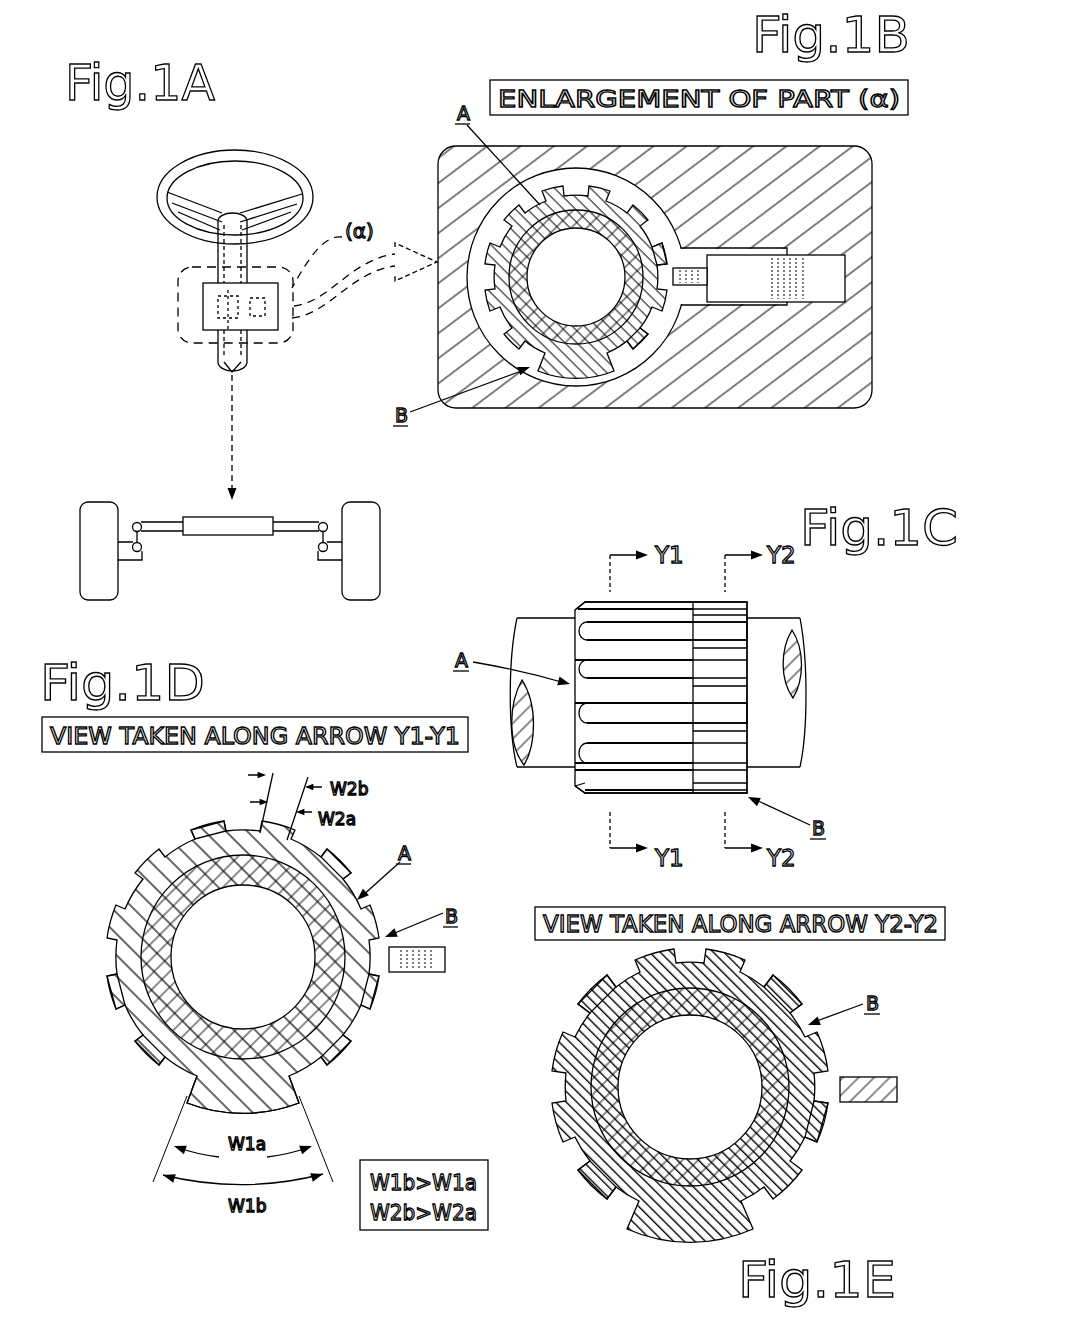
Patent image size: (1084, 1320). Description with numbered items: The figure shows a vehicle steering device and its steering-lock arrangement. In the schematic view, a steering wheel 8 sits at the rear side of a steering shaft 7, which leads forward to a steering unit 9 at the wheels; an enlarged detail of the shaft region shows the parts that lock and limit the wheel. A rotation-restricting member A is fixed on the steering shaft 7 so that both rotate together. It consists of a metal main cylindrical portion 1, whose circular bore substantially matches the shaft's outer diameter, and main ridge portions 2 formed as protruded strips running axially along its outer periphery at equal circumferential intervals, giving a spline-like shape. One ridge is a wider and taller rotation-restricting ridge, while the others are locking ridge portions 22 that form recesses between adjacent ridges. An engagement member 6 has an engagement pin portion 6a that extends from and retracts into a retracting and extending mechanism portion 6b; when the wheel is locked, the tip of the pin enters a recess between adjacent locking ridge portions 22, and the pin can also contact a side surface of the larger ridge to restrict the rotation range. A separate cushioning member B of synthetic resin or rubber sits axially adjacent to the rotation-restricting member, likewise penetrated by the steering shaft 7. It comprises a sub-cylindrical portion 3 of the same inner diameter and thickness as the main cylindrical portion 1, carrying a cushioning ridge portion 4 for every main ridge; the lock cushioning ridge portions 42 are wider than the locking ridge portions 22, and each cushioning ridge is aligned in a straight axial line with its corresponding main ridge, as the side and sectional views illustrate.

In FIG. 1C, the main cylindrical portion 1 is at (563, 644).
In FIG. 1D, the main cylindrical portion 1 is at (132, 893).
In FIG. 1B, the main ridge portions 2 is at (488, 298).
In FIG. 1C, the main ridge portions 2 is at (584, 601).
In FIG. 1D, the main ridge portions 2 is at (200, 1092).
In FIG. 1D, the locking ridge portions 22 is at (207, 823).
In FIG. 1C, the sub-cylindrical portion 3 is at (755, 753).
In FIG. 1E, the sub-cylindrical portion 3 is at (587, 1148).
In FIG. 1B, the cushioning ridge portion 4 is at (505, 306).
In FIG. 1C, the cushioning ridge portion 4 is at (740, 630).
In FIG. 1D, the cushioning ridge portion 4 is at (377, 978).
In FIG. 1E, the cushioning ridge portion 4 is at (822, 1127).
In FIG. 1D, the lock cushioning ridge portion 42 is at (187, 838).
In FIG. 1E, the lock cushioning ridge portion 42 is at (588, 992).
In FIG. 1B, the engagement member 6 is at (764, 369).
In FIG. 1D, the engagement member 6 is at (451, 961).
In FIG. 1E, the engagement member 6 is at (848, 1077).
In FIG. 1B, the engagement pin portion 6a is at (690, 288).
In FIG. 1B, the retracting and extending mechanism portion 6b is at (823, 290).
In FIG. 1A, the steering shaft 7 is at (210, 250).
In FIG. 1B, the steering shaft 7 is at (612, 328).
In FIG. 1C, the steering shaft 7 is at (773, 617).
In FIG. 1D, the steering shaft 7 is at (220, 888).
In FIG. 1E, the steering shaft 7 is at (672, 1017).
In FIG. 1A, the steering wheel 8 is at (292, 162).
In FIG. 1A, the steering unit 9 is at (275, 518).